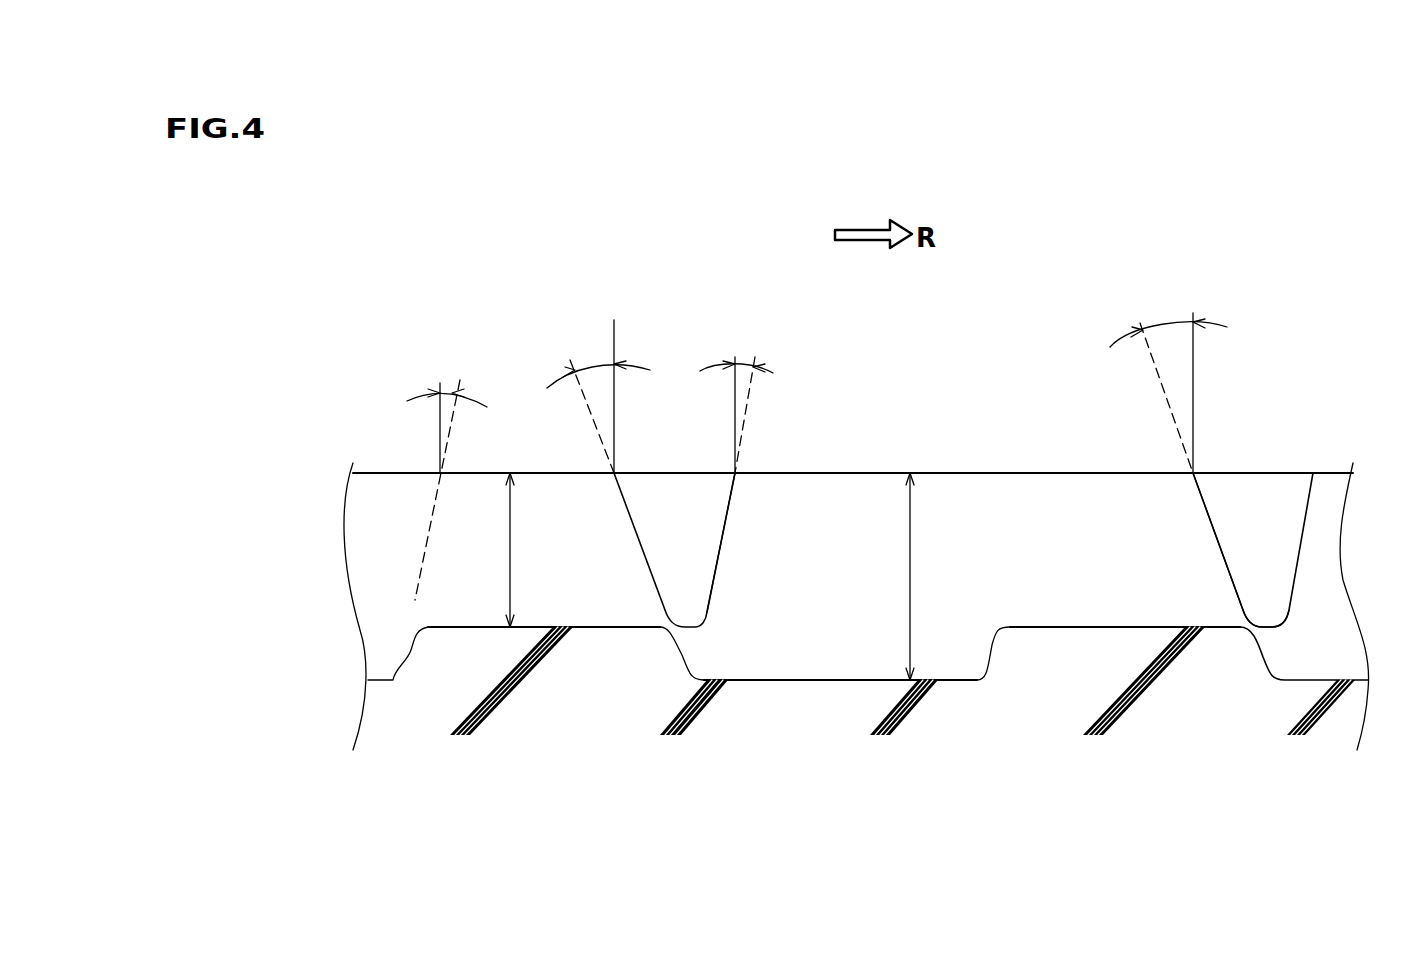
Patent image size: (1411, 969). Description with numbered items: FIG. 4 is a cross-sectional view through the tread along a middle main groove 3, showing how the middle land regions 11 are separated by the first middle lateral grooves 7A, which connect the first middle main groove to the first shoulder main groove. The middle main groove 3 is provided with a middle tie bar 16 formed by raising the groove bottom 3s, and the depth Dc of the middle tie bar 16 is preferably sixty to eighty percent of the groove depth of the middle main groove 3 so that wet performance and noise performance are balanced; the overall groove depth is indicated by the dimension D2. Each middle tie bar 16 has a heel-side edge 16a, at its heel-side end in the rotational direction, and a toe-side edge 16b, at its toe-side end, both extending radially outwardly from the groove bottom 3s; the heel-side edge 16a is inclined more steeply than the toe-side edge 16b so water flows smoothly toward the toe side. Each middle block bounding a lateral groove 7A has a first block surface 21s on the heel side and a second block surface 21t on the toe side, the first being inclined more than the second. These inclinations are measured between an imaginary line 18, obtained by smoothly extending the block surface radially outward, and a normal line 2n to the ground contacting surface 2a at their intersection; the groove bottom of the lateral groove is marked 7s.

The middle land region 11 is at (380, 473).
The normal line 2n is at (440, 423).
The imaginary line 18 is at (748, 403).
The second block surface 21t is at (725, 527).
The first block surface 21s is at (1225, 552).
The first middle lateral groove 7A is at (683, 550).
The ground contacting surface 2a is at (822, 473).
The middle main groove 3 is at (866, 540).
The middle tie bar 16 is at (590, 627).
The heel-side edge 16a is at (683, 655).
The toe-side edge 16b is at (410, 651).
The groove bottom 3s is at (845, 681).
The groove bottom 7s is at (1289, 614).
The depth of middle tie bar Dc is at (510, 552).
The depth D2 is at (910, 577).